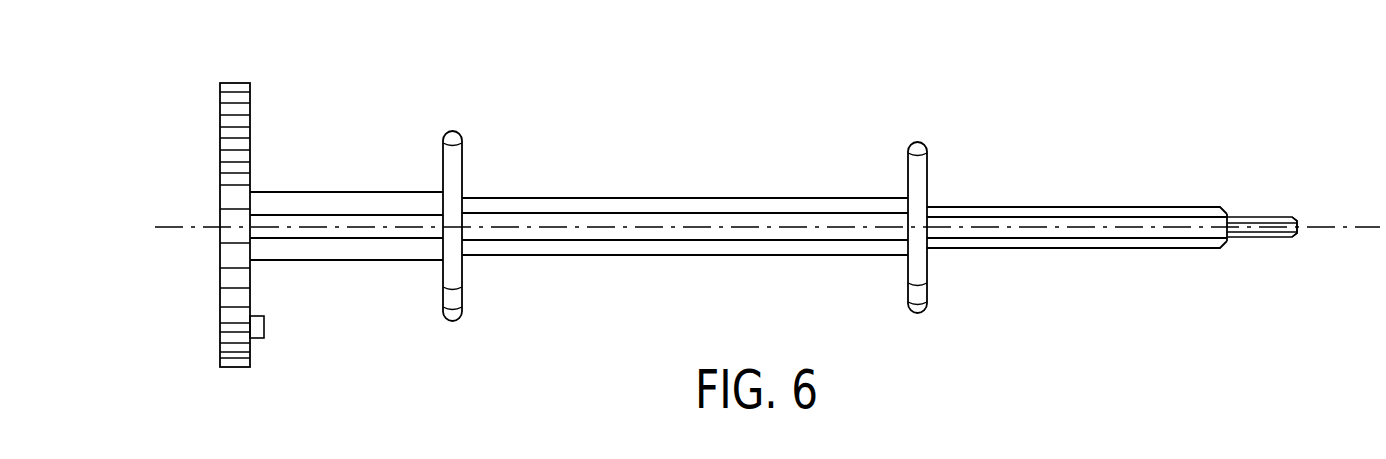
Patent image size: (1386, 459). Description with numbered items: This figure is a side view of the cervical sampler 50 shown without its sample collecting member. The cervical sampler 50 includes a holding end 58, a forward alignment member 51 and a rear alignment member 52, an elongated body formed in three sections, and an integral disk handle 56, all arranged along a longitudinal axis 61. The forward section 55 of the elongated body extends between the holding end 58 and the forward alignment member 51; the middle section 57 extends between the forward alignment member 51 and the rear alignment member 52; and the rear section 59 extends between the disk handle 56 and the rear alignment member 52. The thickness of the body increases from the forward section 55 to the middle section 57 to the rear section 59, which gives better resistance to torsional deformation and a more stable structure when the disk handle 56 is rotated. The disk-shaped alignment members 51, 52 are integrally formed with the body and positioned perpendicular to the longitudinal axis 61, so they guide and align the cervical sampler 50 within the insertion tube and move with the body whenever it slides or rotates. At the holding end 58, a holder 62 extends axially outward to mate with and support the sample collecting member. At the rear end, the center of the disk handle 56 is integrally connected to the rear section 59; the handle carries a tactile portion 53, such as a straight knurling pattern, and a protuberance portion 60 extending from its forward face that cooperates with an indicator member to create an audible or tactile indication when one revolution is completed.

The cervical sampler 50 is at (773, 130).
The forward alignment member 51 is at (908, 290).
The rear alignment member 52 is at (463, 290).
The tactile portion 53 is at (232, 110).
The forward section 55 is at (1055, 207).
The disk handle 56 is at (204, 196).
The middle section 57 is at (647, 198).
The holding end 58 is at (1255, 213).
The rear section 59 is at (329, 192).
The protuberance portion 60 is at (265, 327).
The longitudinal axis 61 is at (1367, 231).
The holder 62 is at (1298, 228).